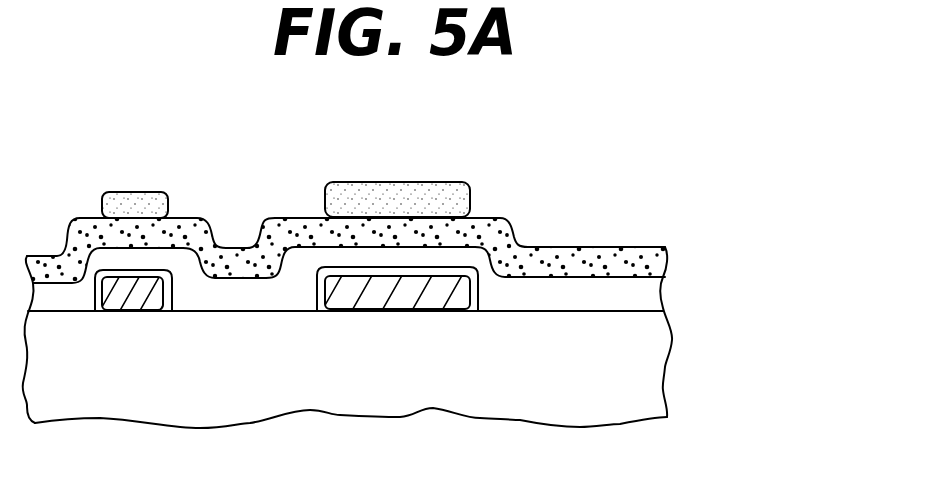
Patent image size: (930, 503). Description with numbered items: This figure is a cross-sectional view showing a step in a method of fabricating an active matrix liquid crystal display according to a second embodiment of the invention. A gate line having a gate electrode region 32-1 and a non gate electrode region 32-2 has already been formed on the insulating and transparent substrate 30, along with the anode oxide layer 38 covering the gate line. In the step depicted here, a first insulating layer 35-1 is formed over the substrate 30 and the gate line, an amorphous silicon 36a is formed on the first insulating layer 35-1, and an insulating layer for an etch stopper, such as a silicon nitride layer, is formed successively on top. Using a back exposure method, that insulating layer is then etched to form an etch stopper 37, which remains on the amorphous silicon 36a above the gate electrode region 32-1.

The insulating and transparent substrate 30 is at (650, 351).
The first insulating layer 35-1 is at (665, 281).
The amorphous silicon 36a is at (667, 253).
The etch stopper 37 is at (450, 193).
The anode oxide layer 38 is at (317, 310).
The gate electrode region 32-1 is at (400, 293).
The non gate electrode region 32-2 is at (117, 312).